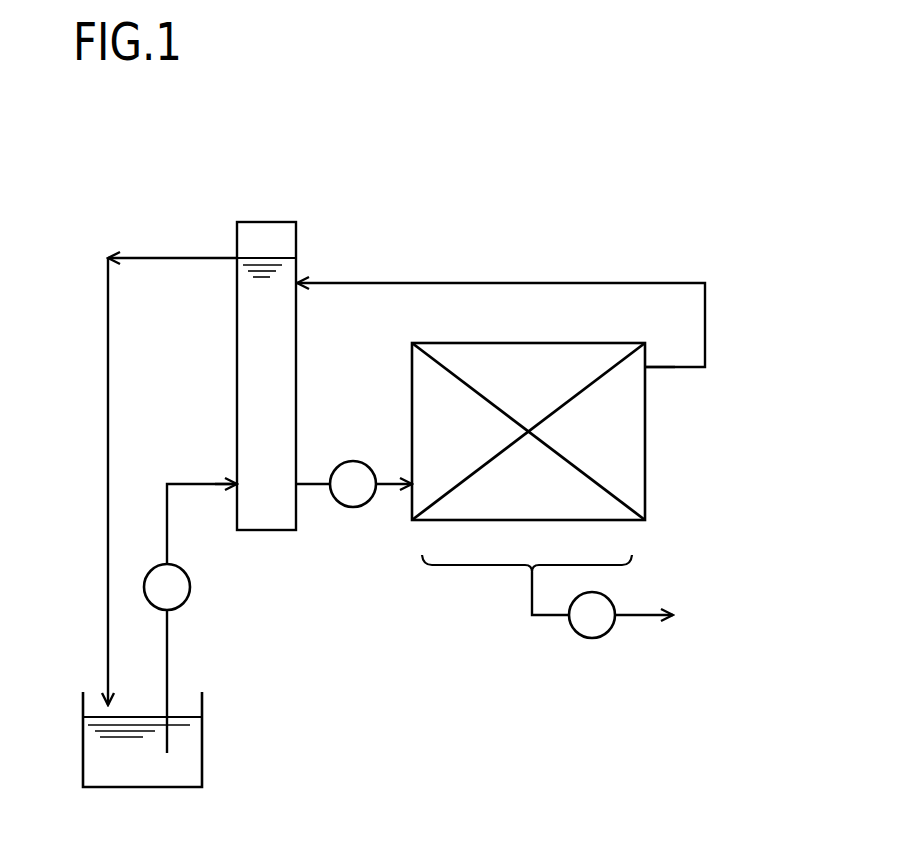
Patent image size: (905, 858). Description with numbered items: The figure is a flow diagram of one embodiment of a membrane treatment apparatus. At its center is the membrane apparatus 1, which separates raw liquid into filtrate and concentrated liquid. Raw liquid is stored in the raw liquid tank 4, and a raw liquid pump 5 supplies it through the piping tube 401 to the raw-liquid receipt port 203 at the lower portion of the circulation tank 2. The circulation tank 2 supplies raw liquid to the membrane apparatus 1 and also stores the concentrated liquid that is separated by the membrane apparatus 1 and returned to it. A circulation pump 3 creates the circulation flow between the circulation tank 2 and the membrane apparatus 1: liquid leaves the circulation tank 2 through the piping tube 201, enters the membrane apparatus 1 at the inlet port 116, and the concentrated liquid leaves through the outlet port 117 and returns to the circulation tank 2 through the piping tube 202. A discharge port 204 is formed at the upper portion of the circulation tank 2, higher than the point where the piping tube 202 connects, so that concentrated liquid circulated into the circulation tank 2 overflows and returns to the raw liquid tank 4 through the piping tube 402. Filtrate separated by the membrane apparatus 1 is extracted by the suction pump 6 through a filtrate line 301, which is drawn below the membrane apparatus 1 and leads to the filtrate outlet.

The membrane apparatus 1 is at (647, 488).
The circulation tank 2 is at (297, 228).
The circulation pump 3 is at (340, 505).
The raw liquid tank 4 is at (202, 740).
The raw liquid pump 5 is at (190, 590).
The suction pump 6 is at (585, 638).
The inlet port 116 is at (405, 492).
The outlet port 117 is at (647, 370).
The piping tube 201 is at (312, 480).
The piping tube 202 is at (440, 282).
The raw-liquid receipt port 203 is at (237, 480).
The discharge port 204 is at (237, 257).
The filtrate pipe 301 is at (530, 585).
The piping tube 401 is at (175, 478).
The piping tube 402 is at (108, 350).